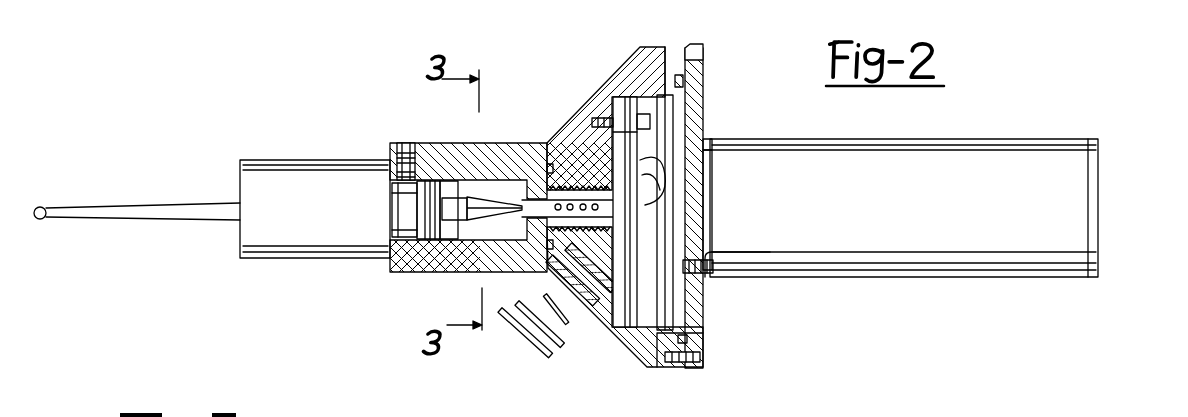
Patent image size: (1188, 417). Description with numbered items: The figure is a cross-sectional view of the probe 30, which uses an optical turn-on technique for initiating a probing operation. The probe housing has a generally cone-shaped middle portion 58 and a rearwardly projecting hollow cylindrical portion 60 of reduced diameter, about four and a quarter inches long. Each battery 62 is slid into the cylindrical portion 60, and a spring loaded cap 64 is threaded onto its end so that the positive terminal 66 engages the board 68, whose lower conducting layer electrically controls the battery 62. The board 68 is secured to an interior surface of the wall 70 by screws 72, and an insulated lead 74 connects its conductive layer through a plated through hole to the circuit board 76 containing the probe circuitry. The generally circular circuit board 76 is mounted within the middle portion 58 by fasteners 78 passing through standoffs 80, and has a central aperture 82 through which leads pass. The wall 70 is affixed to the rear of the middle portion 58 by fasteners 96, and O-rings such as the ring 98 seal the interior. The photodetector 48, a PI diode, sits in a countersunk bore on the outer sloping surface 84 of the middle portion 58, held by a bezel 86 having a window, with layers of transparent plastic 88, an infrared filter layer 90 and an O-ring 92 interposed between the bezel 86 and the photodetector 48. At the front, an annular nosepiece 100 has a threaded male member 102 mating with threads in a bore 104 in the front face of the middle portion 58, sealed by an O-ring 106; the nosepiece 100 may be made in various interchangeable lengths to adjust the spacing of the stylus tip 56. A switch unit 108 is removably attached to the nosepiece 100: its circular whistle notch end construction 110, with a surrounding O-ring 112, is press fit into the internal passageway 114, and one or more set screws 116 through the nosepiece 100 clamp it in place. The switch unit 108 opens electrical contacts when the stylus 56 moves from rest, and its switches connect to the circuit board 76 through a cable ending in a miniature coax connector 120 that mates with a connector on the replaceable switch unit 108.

The probe 30 is at (461, 34).
The photodetector 48 is at (625, 311).
The stylus tip 56 is at (137, 192).
The cone-shaped middle portion 58 is at (693, 39).
The cylindrical portion 60 is at (904, 208).
The battery 62 is at (760, 279).
The spring loaded cap 64 is at (1125, 208).
The positive terminal 66 is at (729, 210).
The board 68 is at (716, 133).
The wall 70 is at (716, 208).
The screws 72 is at (715, 339).
The insulated lead 74 is at (727, 248).
The circuit board 76 is at (675, 364).
The fasteners 78 is at (653, 174).
The standoffs 80 is at (619, 181).
The aperture 82 is at (567, 141).
The outer sloping surface 84 is at (568, 128).
The bezel 86 is at (520, 348).
The transparent plastic layers 88 is at (526, 362).
The infrared filter layer 90 is at (570, 354).
The O-ring 92 is at (553, 274).
The fasteners 96 is at (729, 364).
The O-ring 98 is at (713, 80).
The annular nosepiece 100 is at (468, 195).
The threaded male member 102 is at (597, 118).
The bore 104 is at (550, 151).
The O-ring 106 is at (511, 184).
The switch unit 108 is at (315, 181).
The whistle notch end construction 110 is at (365, 237).
The O-ring 112 is at (420, 164).
The internal passageway 114 is at (411, 255).
The set screws 116 is at (376, 126).
The miniature coax connector 120 is at (464, 250).